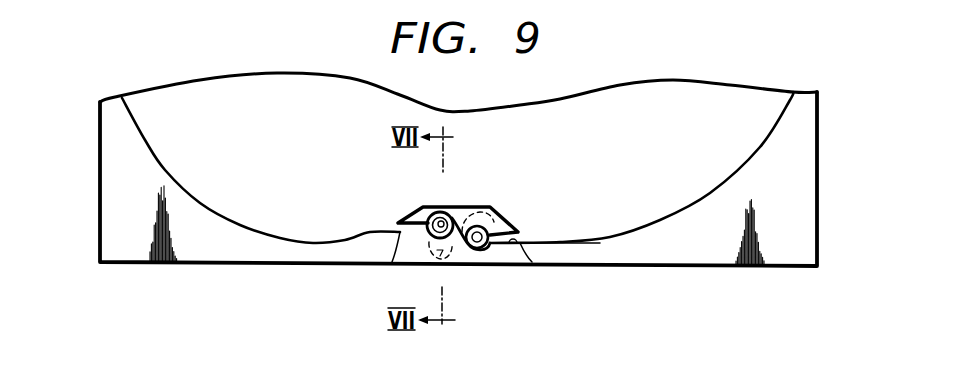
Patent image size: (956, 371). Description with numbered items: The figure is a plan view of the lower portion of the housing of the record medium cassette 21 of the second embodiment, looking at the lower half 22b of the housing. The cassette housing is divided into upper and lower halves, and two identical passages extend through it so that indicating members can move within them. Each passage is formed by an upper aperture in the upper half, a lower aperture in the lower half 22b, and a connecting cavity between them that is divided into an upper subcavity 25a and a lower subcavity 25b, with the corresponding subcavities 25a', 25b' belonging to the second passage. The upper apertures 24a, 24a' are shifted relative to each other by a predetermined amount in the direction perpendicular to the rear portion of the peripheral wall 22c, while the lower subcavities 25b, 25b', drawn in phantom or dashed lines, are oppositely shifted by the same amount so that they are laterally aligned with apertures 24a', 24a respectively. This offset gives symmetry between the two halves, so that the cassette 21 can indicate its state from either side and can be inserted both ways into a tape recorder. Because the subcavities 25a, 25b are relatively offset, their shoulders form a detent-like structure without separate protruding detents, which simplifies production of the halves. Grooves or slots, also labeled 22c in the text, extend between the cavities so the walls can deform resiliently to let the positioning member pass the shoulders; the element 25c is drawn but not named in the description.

The record medium cassette 21 is at (648, 78).
The lower half 22b is at (713, 253).
The peripheral wall 22c is at (213, 264).
The upper aperture 24a is at (437, 201).
The upper aperture 24a' is at (509, 273).
The subcavity 25a is at (436, 193).
The subcavity 25a' is at (523, 279).
The subcavity 25b is at (422, 274).
The subcavity 25b' is at (512, 191).
The support arm 25c is at (452, 218).